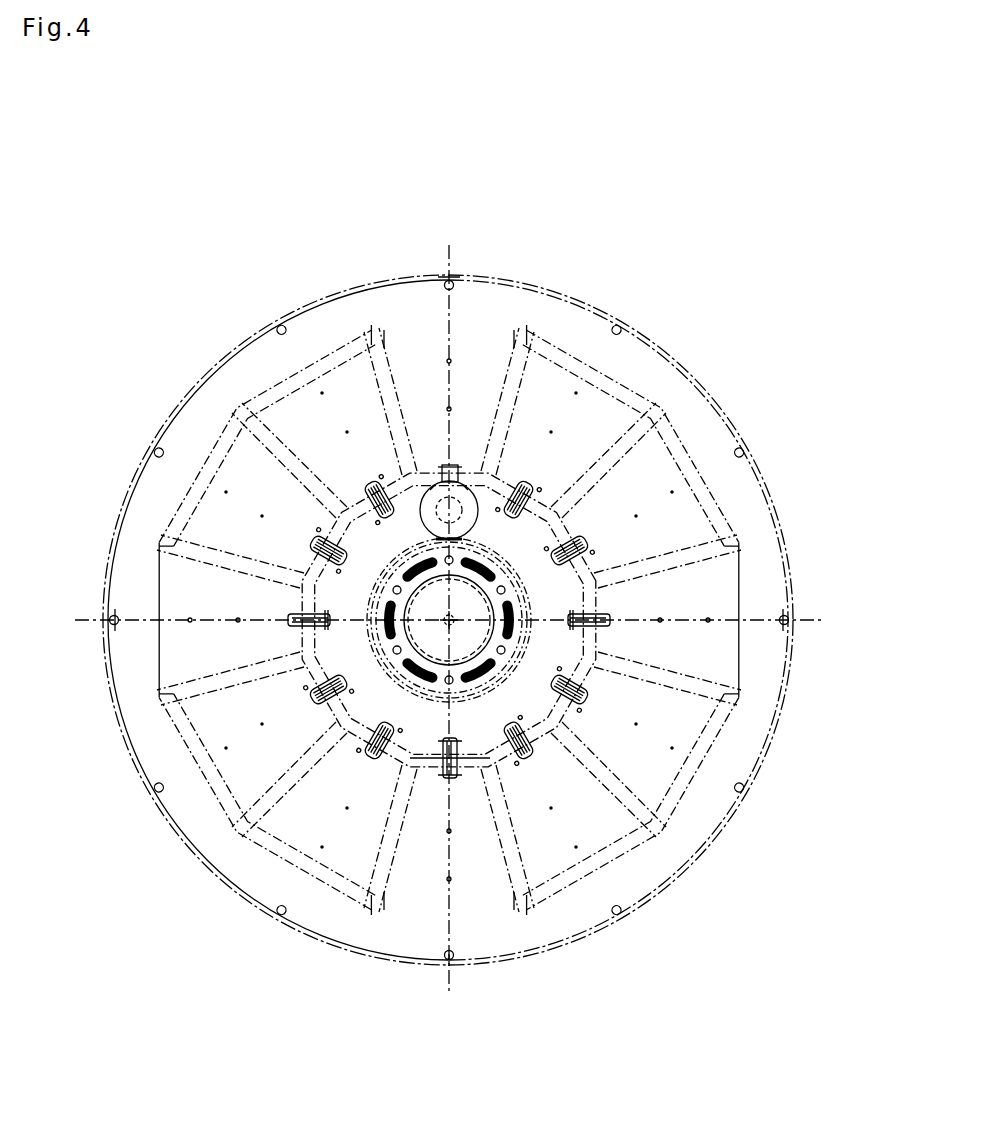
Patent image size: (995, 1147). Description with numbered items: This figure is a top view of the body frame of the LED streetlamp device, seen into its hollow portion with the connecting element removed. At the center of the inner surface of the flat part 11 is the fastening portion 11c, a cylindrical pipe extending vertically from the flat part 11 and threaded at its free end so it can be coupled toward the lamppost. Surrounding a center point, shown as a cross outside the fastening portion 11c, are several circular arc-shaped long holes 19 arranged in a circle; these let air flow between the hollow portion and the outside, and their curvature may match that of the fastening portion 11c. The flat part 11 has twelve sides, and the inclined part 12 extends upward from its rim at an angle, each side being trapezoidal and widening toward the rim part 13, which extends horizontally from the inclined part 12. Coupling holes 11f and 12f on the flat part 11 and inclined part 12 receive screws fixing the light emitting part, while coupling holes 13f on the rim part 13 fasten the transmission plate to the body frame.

The flat part 11 is at (320, 580).
The fastening portion 11c is at (513, 598).
The coupling hole 11f is at (547, 673).
The inclined part 12 is at (293, 438).
The coupling hole 12f is at (662, 618).
The rim part 13 is at (712, 437).
The coupling hole 13f is at (618, 328).
The circular arc-shaped long hole 19 is at (490, 570).